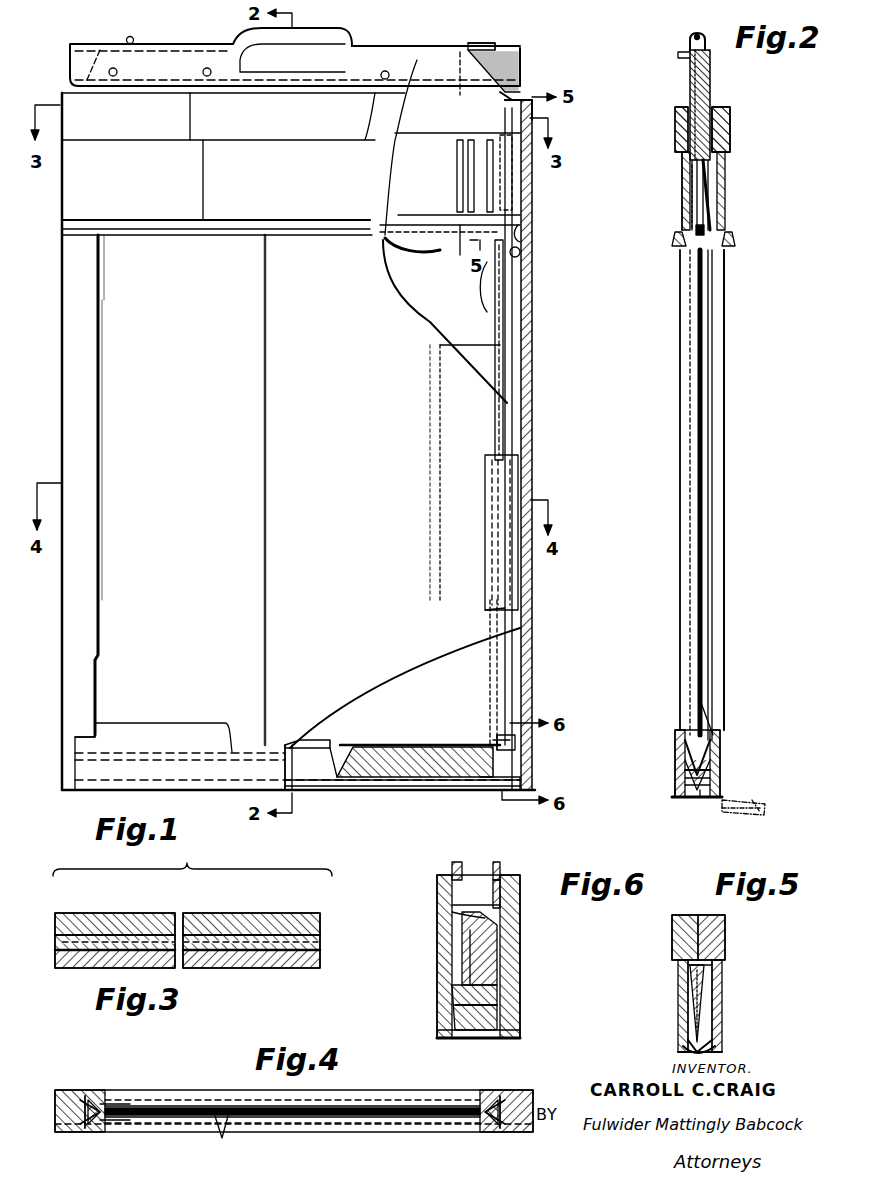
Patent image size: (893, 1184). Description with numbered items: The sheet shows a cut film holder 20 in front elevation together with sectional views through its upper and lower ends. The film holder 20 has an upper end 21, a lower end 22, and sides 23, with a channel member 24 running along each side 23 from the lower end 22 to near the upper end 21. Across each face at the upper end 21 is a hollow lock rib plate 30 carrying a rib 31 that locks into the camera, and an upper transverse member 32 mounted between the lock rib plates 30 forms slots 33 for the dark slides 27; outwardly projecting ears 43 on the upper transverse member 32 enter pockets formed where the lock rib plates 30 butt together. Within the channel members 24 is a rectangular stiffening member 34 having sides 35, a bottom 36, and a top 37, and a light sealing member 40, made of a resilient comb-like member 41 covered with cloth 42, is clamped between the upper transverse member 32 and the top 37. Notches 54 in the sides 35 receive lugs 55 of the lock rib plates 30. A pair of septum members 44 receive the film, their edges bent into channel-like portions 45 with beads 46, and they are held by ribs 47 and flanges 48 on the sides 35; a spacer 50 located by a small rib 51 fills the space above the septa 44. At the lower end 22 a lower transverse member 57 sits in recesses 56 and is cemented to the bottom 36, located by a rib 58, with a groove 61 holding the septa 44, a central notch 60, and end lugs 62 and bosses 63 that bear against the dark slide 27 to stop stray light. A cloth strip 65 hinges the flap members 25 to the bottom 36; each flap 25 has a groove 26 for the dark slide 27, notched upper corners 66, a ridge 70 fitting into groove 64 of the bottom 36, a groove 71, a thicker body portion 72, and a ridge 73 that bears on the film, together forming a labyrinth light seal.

In FIG. 1, the film holder 20 is at (530, 444).
In FIG. 2, the film holder 20 is at (728, 512).
In FIG. 1, the upper end 21 is at (531, 86).
In FIG. 2, the upper end 21 is at (670, 102).
In FIG. 1, the lower end 22 is at (430, 796).
In FIG. 2, the lower end 22 is at (665, 790).
In FIG. 6, the lower end 22 is at (528, 1010).
In FIG. 1, the sides 23 is at (526, 611).
In FIG. 4, the sides 23 is at (55, 1104).
In FIG. 1, the channel member 24 is at (534, 678).
In FIG. 2, the channel member 24 is at (722, 598).
In FIG. 4, the channel member 24 is at (68, 1090).
In FIG. 1, the hinged flap member 25 is at (226, 724).
In FIG. 2, the hinged flap member 25 is at (675, 752).
In FIG. 6, the hinged flap member 25 is at (437, 984).
In FIG. 2, the groove 26 is at (678, 725).
In FIG. 1, the dark slide 27 is at (297, 490).
In FIG. 2, the dark slide 27 is at (680, 628).
In FIG. 3, the dark slide 27 is at (128, 930).
In FIG. 6, the dark slide 27 is at (493, 876).
In FIG. 4, the dark slide 27 is at (332, 1100).
In FIG. 1, the lock rib plate 30 is at (218, 164).
In FIG. 2, the lock rib plate 30 is at (682, 181).
In FIG. 3, the lock rib plate 30 is at (288, 930).
In FIG. 5, the lock rib plate 30 is at (672, 950).
In FIG. 1, the rib 31 is at (290, 226).
In FIG. 2, the rib 31 is at (680, 242).
In FIG. 1, the upper transverse member 32 is at (462, 69).
In FIG. 2, the upper transverse member 32 is at (712, 100).
In FIG. 3, the upper transverse member 32 is at (250, 926).
In FIG. 5, the upper transverse member 32 is at (728, 920).
In FIG. 2, the slot 33 is at (714, 112).
In FIG. 3, the slot 33 is at (212, 930).
In FIG. 1, the stiffening member 34 is at (512, 350).
In FIG. 2, the stiffening member 34 is at (680, 160).
In FIG. 1, the side 35 is at (515, 372).
In FIG. 4, the side 35 is at (76, 1132).
In FIG. 1, the bottom 36 is at (482, 792).
In FIG. 2, the bottom 36 is at (702, 798).
In FIG. 6, the bottom 36 is at (478, 1015).
In FIG. 1, the top 37 is at (508, 132).
In FIG. 2, the top 37 is at (710, 162).
In FIG. 5, the top 37 is at (724, 975).
In FIG. 1, the light sealing member 40 is at (440, 140).
In FIG. 2, the light sealing member 40 is at (730, 140).
In FIG. 5, the light sealing member 40 is at (712, 996).
In FIG. 1, the comb-like member 41 is at (478, 198).
In FIG. 2, the comb-like member 41 is at (690, 192).
In FIG. 1, the cloth 42 is at (432, 232).
In FIG. 2, the cloth 42 is at (712, 205).
In FIG. 1, the ear 43 is at (535, 112).
In FIG. 3, the ear 43 is at (86, 922).
In FIG. 1, the septum member 44 is at (405, 688).
In FIG. 2, the septum member 44 is at (708, 638).
In FIG. 5, the septum member 44 is at (680, 1050).
In FIG. 4, the septum member 44 is at (292, 1130).
In FIG. 1, the channel-like portion 45 is at (437, 250).
In FIG. 2, the channel-like portion 45 is at (712, 677).
In FIG. 5, the channel-like portion 45 is at (718, 1045).
In FIG. 4, the channel-like portion 45 is at (98, 1100).
In FIG. 1, the bead 46 is at (490, 672).
In FIG. 4, the bead 46 is at (108, 1104).
In FIG. 1, the rib 47 is at (503, 298).
In FIG. 4, the rib 47 is at (85, 1096).
In FIG. 1, the flange 48 is at (488, 292).
In FIG. 4, the flange 48 is at (88, 1124).
In FIG. 1, the spacer 50 is at (461, 243).
In FIG. 2, the spacer 50 is at (704, 230).
In FIG. 5, the spacer 50 is at (710, 1022).
In FIG. 5, the rib 51 is at (722, 990).
In FIG. 1, the notch 54 is at (522, 257).
In FIG. 1, the lug 55 is at (528, 232).
In FIG. 1, the recess 56 is at (495, 738).
In FIG. 1, the lower transverse member 57 is at (432, 732).
In FIG. 2, the lower transverse member 57 is at (685, 775).
In FIG. 6, the lower transverse member 57 is at (480, 960).
In FIG. 1, the rib 58 is at (380, 788).
In FIG. 2, the rib 58 is at (716, 778).
In FIG. 6, the rib 58 is at (457, 1006).
In FIG. 1, the notch 60 is at (322, 738).
In FIG. 1, the groove 61 is at (372, 748).
In FIG. 2, the groove 61 is at (712, 748).
In FIG. 1, the lug 62 is at (497, 728).
In FIG. 6, the lug 62 is at (452, 903).
In FIG. 1, the boss 63 is at (520, 746).
In FIG. 6, the boss 63 is at (500, 915).
In FIG. 1, the groove 64 is at (398, 792).
In FIG. 1, the cloth strip 65 is at (315, 792).
In FIG. 2, the cloth strip 65 is at (678, 798).
In FIG. 6, the cloth strip 65 is at (510, 1040).
In FIG. 1, the notched upper corner 66 is at (96, 724).
In FIG. 6, the ridge 70 is at (452, 1035).
In FIG. 2, the groove 71 is at (682, 786).
In FIG. 2, the body portion 72 is at (680, 762).
In FIG. 2, the ridge 73 is at (712, 722).